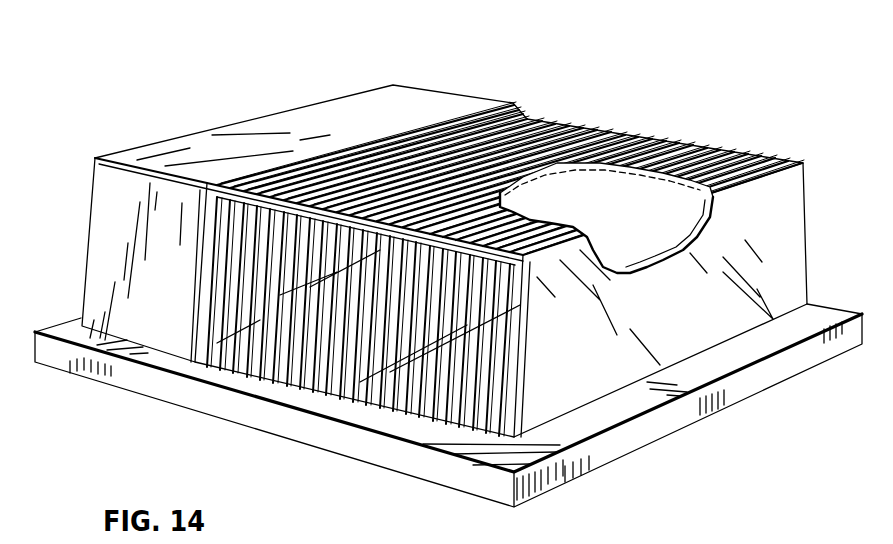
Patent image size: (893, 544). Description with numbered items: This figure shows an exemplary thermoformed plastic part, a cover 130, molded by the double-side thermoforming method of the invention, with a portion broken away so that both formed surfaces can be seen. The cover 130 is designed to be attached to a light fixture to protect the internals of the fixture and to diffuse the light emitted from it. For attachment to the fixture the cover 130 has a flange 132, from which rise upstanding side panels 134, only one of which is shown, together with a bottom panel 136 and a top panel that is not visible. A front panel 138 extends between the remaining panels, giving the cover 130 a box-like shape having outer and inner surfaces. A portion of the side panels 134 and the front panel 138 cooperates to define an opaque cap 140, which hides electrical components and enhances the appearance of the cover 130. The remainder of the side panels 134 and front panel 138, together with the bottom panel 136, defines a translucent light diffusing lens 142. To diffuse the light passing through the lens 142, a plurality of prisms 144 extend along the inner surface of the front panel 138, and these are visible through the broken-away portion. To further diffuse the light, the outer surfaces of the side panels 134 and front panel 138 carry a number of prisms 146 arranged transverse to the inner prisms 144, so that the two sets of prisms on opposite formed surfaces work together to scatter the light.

The cover 130 is at (790, 36).
The flange 132 is at (730, 394).
The side panels 134 is at (100, 235).
The bottom panel 136 is at (782, 234).
The front panel 138 is at (457, 102).
The opaque cap 140 is at (275, 123).
The translucent light diffusing lens 142 is at (793, 148).
The prisms 144 is at (569, 186).
The prisms 146 is at (570, 125).